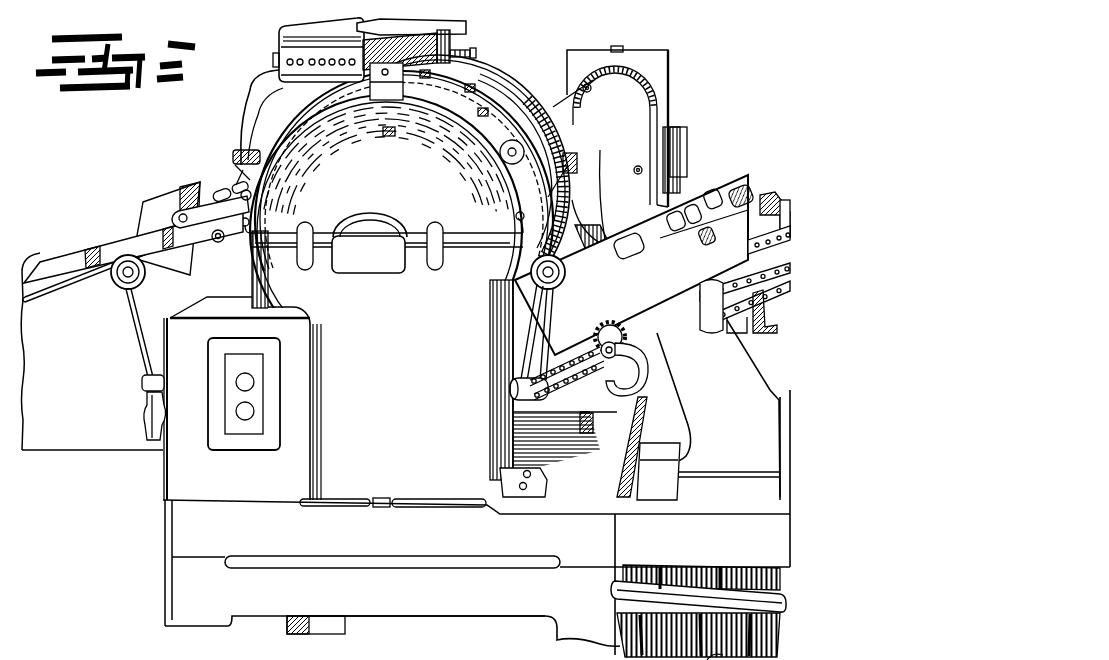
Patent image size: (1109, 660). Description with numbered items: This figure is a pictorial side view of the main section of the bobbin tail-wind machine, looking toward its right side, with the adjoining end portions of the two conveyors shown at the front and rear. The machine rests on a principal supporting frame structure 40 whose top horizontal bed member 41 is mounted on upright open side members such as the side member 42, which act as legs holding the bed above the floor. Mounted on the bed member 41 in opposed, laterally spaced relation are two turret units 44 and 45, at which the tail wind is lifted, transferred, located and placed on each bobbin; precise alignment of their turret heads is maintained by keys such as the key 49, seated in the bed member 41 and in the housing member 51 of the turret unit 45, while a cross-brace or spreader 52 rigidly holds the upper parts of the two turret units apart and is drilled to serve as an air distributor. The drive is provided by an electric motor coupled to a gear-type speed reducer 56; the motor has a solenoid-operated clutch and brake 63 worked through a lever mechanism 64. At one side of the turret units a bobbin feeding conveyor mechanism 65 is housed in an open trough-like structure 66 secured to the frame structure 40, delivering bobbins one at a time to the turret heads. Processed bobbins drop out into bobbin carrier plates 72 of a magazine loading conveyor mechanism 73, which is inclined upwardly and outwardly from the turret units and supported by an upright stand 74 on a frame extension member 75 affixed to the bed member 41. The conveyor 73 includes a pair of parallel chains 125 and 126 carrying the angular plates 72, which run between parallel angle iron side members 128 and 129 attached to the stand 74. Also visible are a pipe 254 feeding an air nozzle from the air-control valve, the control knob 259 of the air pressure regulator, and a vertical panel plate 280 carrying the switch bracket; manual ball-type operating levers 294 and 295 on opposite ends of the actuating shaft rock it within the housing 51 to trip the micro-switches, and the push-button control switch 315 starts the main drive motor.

The principal supporting frame structure 40 is at (405, 618).
The top horizontal bed member 41 is at (180, 522).
The upright open side member 42 is at (178, 575).
The turret unit 44 is at (508, 83).
The turret unit 45 is at (397, 273).
The key 49 is at (386, 498).
The housing member 51 is at (476, 405).
The cross-brace 52 is at (420, 34).
The gear-type speed reducer 56 is at (657, 62).
The solenoid-operated clutch and brake 63 is at (287, 39).
The lever mechanism 64 is at (472, 50).
The bobbin feeding conveyor mechanism 65 is at (92, 351).
The trough-like structure 66 is at (65, 437).
The bobbin carrier plate 72 is at (695, 217).
The magazine loading conveyor mechanism 73 is at (631, 265).
The upright stand 74 is at (680, 390).
The frame extension member 75 is at (698, 595).
The chain 125 is at (727, 293).
The chain 126 is at (700, 310).
The angle iron side member 128 is at (713, 195).
The angle iron side member 129 is at (707, 235).
The pipe 254 is at (517, 342).
The control knob 259 is at (147, 410).
The vertical panel plate 280 is at (160, 477).
The ball-type operating lever 294 is at (140, 347).
The ball-type operating lever 295 is at (548, 303).
The push-button control switch 315 is at (255, 393).